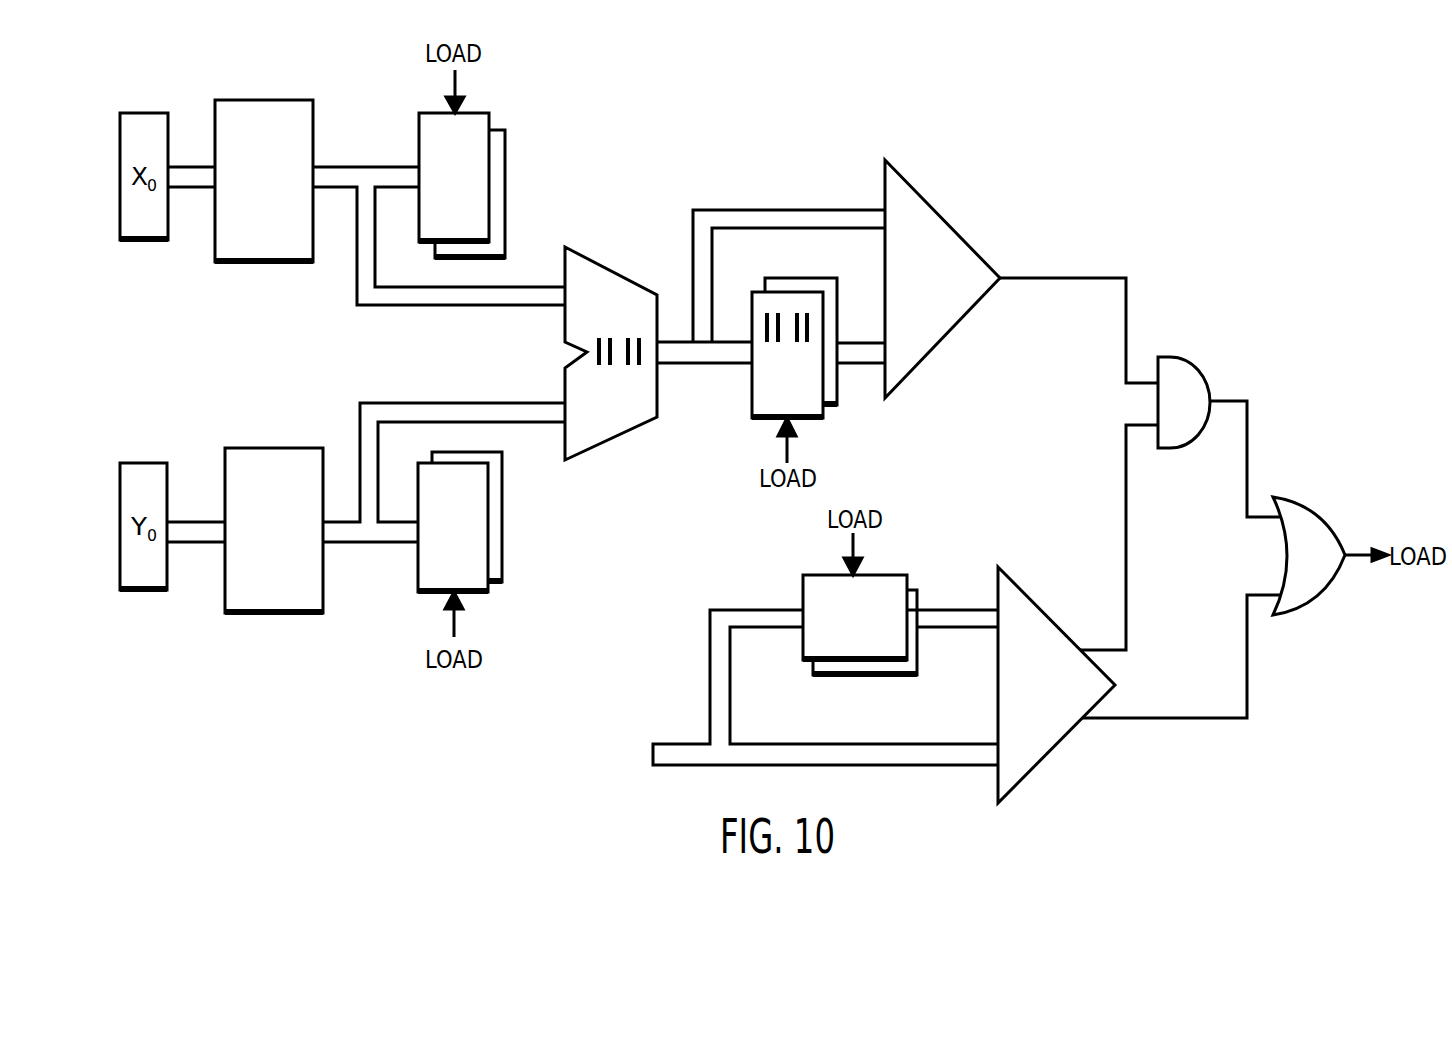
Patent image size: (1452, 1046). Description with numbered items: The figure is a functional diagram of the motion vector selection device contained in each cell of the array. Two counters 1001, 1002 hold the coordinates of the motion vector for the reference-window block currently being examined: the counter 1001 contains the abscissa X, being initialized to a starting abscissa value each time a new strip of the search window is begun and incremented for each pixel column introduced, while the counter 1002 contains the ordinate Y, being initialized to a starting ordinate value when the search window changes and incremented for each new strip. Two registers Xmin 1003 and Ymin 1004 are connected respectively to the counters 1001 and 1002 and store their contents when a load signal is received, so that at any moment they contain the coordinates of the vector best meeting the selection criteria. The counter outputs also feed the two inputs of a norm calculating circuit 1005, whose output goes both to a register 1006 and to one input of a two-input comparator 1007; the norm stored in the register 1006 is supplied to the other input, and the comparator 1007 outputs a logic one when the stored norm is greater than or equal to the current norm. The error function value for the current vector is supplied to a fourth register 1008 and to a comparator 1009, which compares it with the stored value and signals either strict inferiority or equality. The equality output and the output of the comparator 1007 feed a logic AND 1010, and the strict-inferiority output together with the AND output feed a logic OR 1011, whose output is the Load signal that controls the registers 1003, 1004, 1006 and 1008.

The counter 1001 is at (253, 100).
The counter 1002 is at (257, 615).
The Xmin register 1003 is at (505, 165).
The Ymin register 1004 is at (503, 560).
The norm calculating circuit 1005 is at (600, 442).
The register 1006 is at (838, 385).
The comparator 1007 is at (935, 190).
The fourth register 1008 is at (893, 573).
The comparator 1009 is at (1052, 748).
The logic AND 1010 is at (1190, 362).
The logic OR 1011 is at (1322, 607).